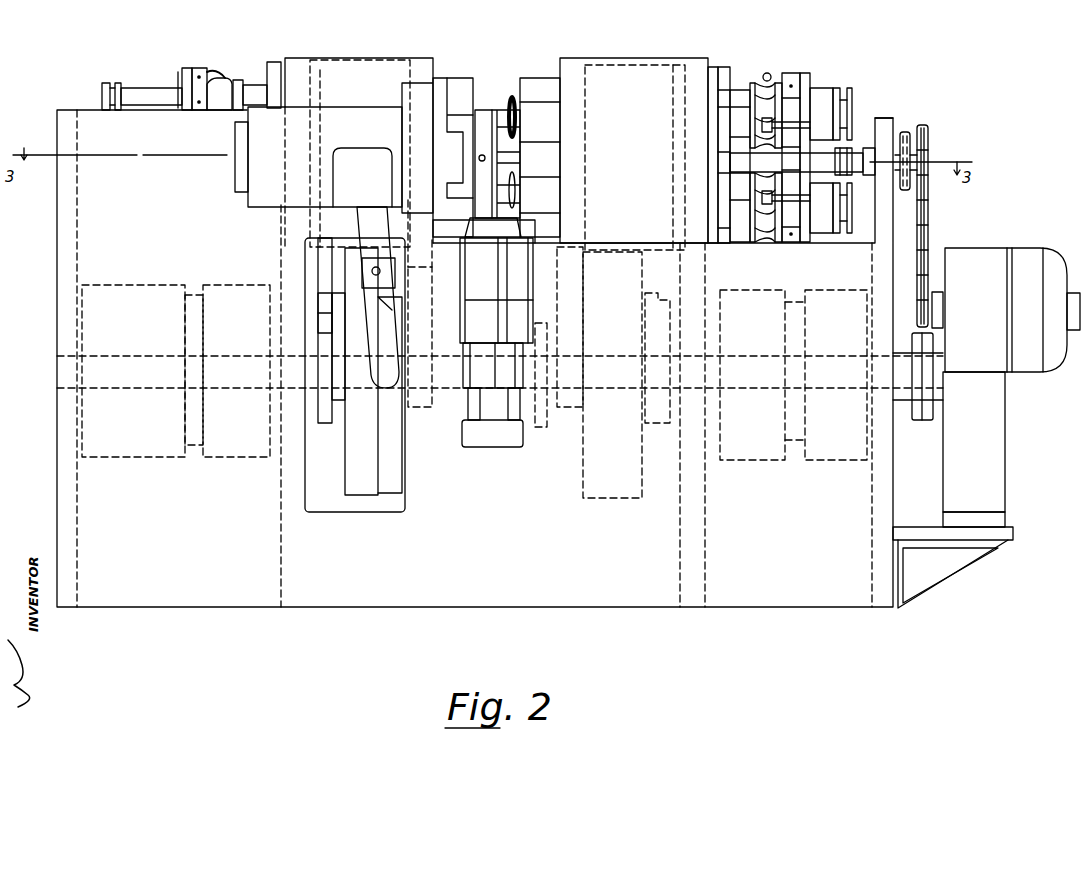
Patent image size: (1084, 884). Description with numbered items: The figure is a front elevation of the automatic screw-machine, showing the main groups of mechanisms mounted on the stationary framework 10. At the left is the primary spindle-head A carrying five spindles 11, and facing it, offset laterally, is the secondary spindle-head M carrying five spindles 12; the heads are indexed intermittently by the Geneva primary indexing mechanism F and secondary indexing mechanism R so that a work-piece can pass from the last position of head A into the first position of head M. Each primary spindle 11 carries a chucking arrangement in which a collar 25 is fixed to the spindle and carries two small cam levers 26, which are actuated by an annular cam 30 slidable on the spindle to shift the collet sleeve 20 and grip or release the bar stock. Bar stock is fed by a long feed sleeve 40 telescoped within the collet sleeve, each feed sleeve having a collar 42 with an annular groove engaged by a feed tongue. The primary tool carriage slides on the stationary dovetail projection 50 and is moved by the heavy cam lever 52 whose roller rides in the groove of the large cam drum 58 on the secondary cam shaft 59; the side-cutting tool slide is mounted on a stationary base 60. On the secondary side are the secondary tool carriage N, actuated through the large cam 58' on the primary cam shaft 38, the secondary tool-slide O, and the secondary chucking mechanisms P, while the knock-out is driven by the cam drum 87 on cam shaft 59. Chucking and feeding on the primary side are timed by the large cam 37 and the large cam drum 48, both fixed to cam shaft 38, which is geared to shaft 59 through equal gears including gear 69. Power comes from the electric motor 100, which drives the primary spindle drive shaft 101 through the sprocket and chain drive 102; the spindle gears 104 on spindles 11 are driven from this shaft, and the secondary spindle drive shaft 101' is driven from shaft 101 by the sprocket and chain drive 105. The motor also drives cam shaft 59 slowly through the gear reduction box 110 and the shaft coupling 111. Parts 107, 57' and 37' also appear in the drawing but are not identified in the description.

The stationary framework 10 is at (60, 267).
The collar 42 is at (110, 83).
The feed sleeve 40 is at (139, 88).
The collar 25 is at (196, 68).
The cam levers 26 is at (213, 70).
The annular cam 30 is at (220, 100).
The collet sleeve 20 is at (255, 83).
The spindle gears 104 is at (275, 62).
The primary spindle-head A is at (373, 58).
The stationary dovetail projection 50 is at (242, 172).
The secondary tool carriage N is at (263, 207).
The cam lever 52 is at (362, 222).
The primary spindles 11 is at (447, 78).
The secondary tool-slide O is at (483, 108).
The cam follower slots 107 is at (510, 102).
The secondary spindles 12 is at (532, 78).
The secondary spindle-head M is at (577, 63).
The stationary base 60 is at (462, 226).
The gear 69 is at (540, 420).
The large cam 58' is at (355, 389).
The inner panel 57' is at (373, 371).
The primary indexing mechanism F is at (325, 423).
The secondary spindles' chucking mechanisms P is at (737, 92).
The secondary spindle drive shaft 101' is at (802, 161).
The sprocket and chain drive 105 is at (907, 132).
The primary spindle drive shaft 101 is at (937, 147).
The sprocket and chain drive 102 is at (928, 236).
The electric motor 100 is at (1025, 263).
The gear reduction box 110 is at (1007, 448).
The shaft coupling 111 is at (915, 423).
The large cam drum 58 is at (612, 394).
The secondary indexing mechanism R is at (662, 425).
The hidden block 37' is at (752, 396).
The cam drum 87 is at (845, 460).
The secondary cam shaft 59 is at (745, 392).
The large cam drum 48 is at (115, 457).
The large cam 37 is at (227, 389).
The primary cam shaft 38 is at (128, 388).